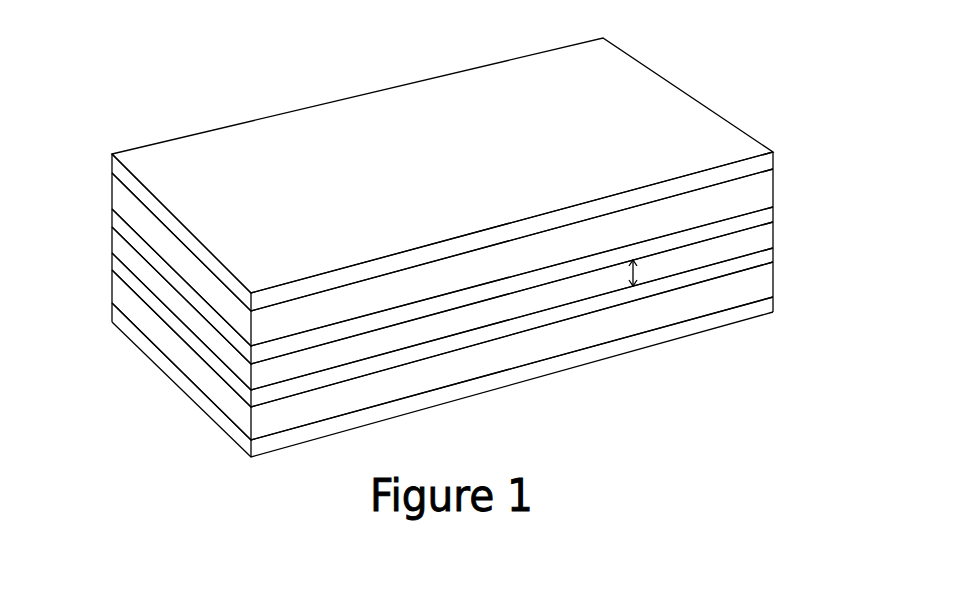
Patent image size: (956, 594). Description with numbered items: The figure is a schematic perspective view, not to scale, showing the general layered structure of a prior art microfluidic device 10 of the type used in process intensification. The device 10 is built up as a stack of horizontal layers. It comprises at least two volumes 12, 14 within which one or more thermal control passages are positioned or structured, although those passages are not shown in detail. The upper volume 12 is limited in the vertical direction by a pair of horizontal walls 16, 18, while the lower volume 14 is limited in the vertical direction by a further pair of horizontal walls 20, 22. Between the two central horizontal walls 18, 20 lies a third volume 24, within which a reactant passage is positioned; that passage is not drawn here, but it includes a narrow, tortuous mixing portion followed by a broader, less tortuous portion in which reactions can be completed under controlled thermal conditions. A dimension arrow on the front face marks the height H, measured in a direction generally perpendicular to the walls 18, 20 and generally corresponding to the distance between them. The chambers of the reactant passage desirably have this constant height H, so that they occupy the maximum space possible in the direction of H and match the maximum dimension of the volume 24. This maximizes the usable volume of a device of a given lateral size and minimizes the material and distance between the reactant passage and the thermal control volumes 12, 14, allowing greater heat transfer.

The microfluidic device 10 is at (198, 495).
The volume 12 is at (114, 293).
The volume 14 is at (114, 198).
The horizontal wall 16 is at (760, 308).
The horizontal wall 18 is at (762, 256).
The horizontal wall 20 is at (762, 214).
The horizontal wall 22 is at (755, 166).
The volume 24 is at (114, 245).
The height H is at (637, 272).